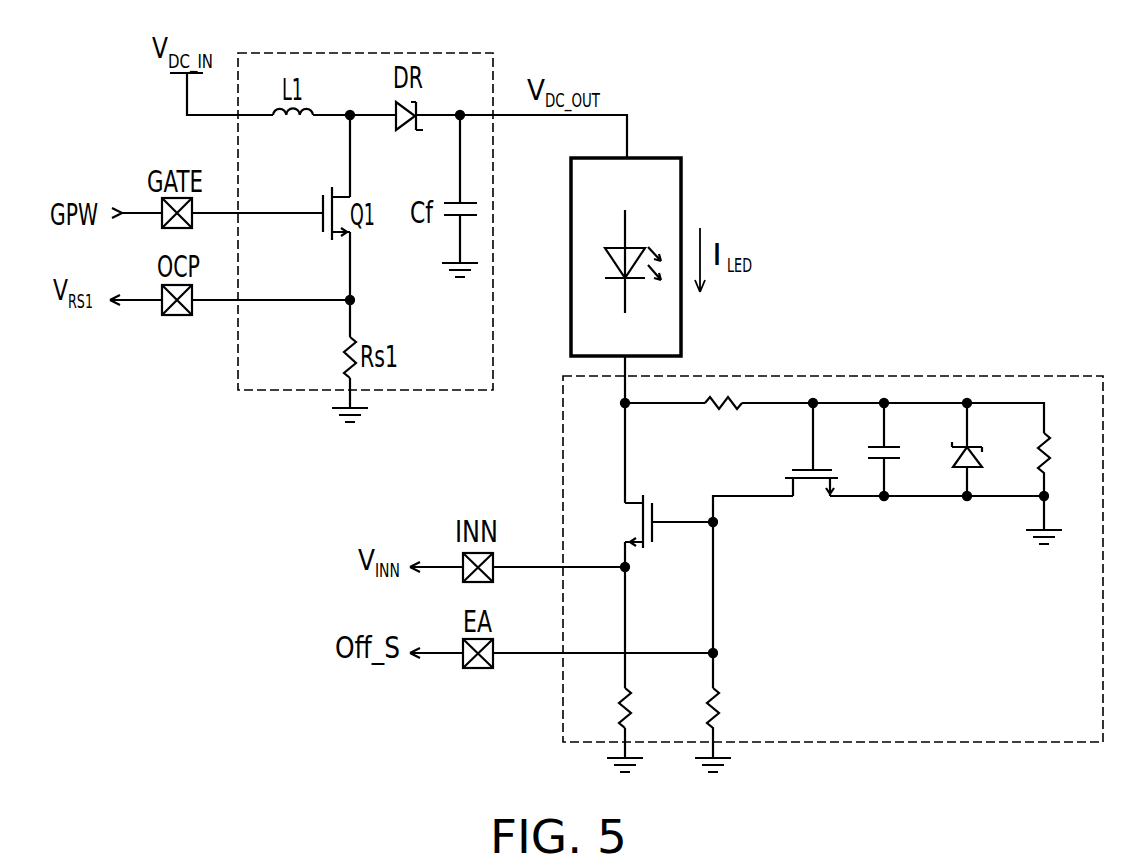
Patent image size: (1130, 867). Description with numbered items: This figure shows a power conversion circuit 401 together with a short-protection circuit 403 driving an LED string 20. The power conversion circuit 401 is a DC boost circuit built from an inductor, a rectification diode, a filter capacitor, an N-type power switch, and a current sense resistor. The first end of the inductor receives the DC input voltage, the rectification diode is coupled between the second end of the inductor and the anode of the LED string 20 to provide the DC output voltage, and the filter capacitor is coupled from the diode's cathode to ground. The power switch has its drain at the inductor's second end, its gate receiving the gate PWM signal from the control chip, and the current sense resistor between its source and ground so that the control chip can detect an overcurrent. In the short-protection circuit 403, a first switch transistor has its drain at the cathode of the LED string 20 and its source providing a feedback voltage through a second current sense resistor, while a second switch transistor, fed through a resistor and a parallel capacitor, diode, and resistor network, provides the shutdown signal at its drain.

The power conversion circuit 401 is at (427, 52).
The LED string 20 is at (682, 182).
The short-protection circuit 403 is at (1004, 375).